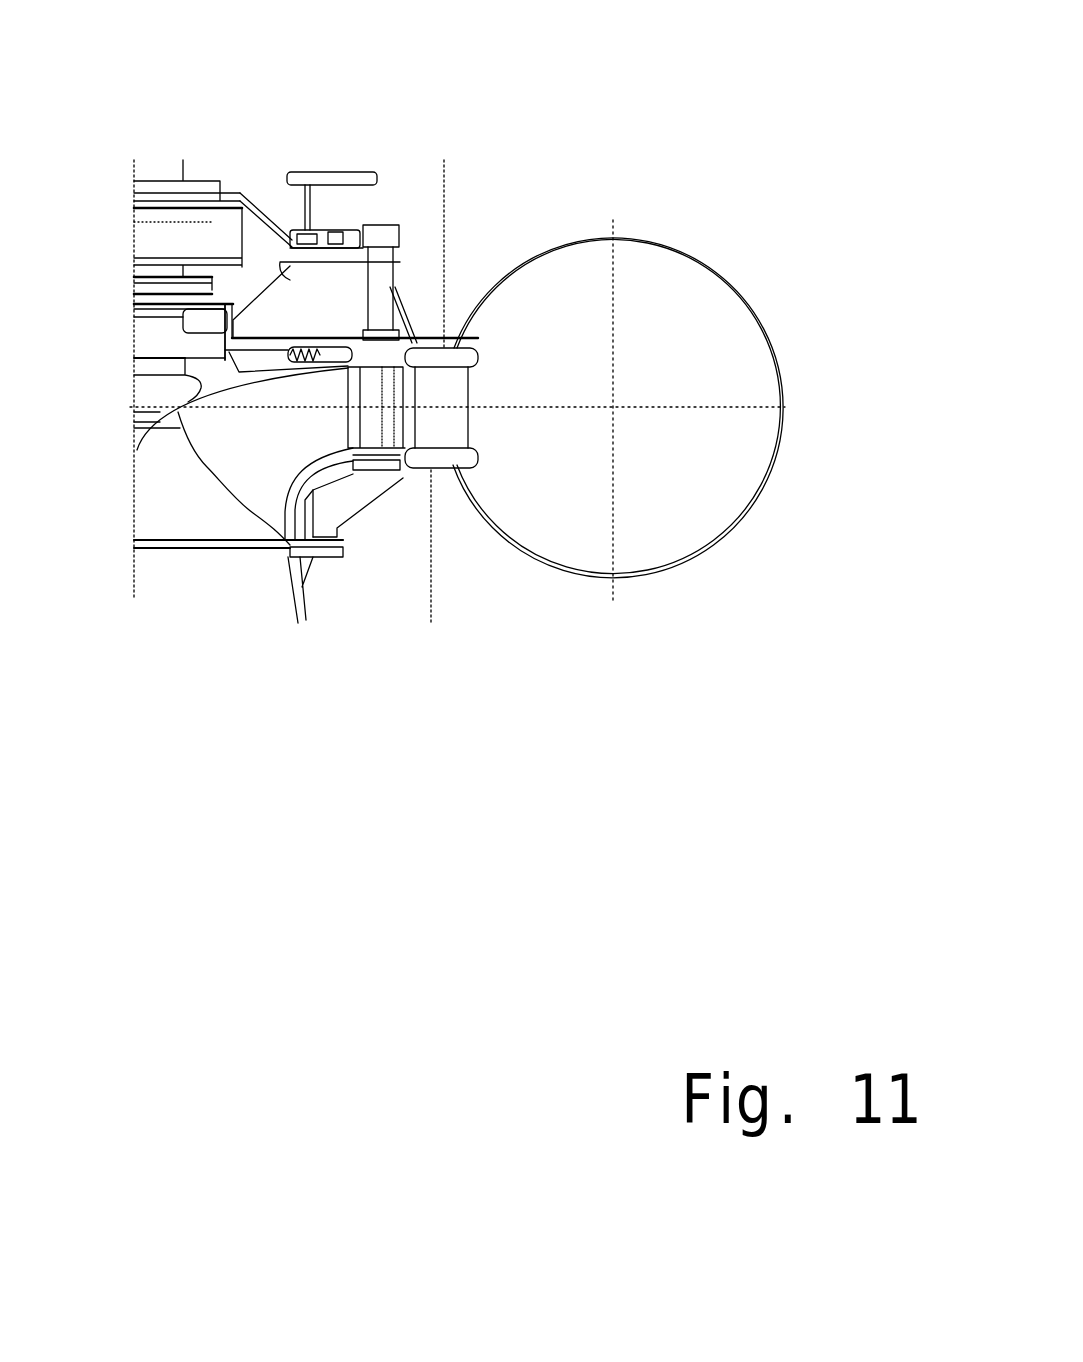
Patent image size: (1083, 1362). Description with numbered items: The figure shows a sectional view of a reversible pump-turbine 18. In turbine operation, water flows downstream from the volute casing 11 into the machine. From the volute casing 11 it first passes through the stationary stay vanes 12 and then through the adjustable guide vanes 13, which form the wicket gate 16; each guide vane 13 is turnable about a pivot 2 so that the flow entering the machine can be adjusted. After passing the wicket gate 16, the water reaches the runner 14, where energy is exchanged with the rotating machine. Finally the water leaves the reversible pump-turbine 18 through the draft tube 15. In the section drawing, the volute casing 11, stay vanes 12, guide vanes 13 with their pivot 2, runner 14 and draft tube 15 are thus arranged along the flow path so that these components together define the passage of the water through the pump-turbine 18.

The pivot 2 is at (392, 280).
The volute casing 11 is at (712, 316).
The stay vanes 12 is at (438, 393).
The guide vanes 13 is at (390, 420).
The runner 14 is at (237, 457).
The draft tube 15 is at (207, 603).
The wicket gate 16 is at (399, 371).
The pump-turbine 18 is at (606, 148).